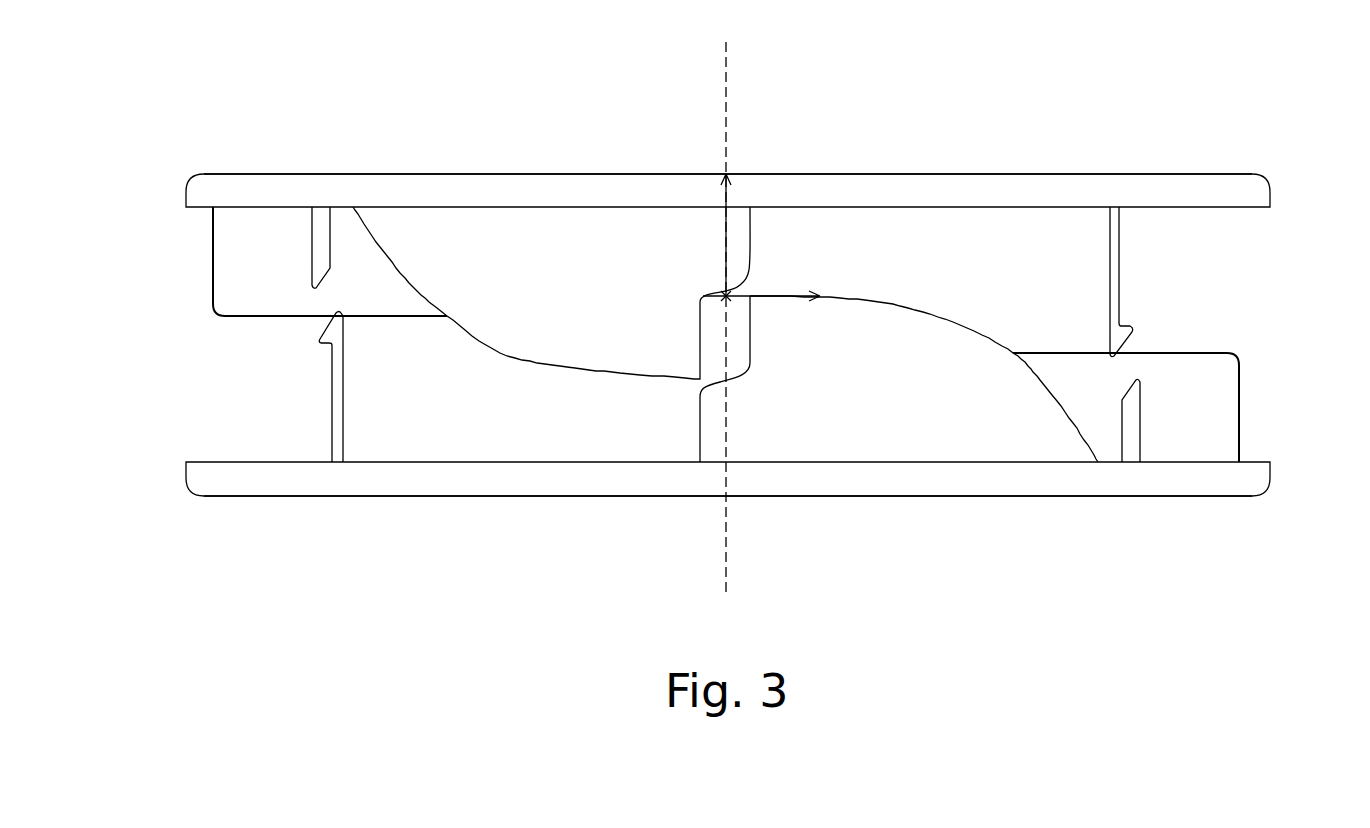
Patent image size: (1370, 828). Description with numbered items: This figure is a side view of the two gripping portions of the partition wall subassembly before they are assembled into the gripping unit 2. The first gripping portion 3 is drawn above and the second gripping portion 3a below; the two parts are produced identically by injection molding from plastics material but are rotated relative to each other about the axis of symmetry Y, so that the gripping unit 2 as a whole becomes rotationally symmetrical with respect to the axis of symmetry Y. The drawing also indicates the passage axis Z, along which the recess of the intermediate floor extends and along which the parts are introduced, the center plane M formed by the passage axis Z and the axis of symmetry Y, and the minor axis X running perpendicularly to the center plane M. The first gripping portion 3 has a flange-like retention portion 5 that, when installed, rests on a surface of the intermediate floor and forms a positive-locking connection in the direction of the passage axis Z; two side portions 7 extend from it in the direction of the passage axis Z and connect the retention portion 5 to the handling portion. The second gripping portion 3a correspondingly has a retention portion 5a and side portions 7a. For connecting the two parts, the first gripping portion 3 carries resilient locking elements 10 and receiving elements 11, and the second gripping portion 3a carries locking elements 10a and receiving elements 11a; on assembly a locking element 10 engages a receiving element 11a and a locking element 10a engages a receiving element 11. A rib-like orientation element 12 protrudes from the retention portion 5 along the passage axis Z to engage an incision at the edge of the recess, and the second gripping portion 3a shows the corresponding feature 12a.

The gripping unit 2 is at (983, 142).
The first gripping portion 3 is at (450, 183).
The second gripping portion 3a is at (1035, 483).
The retention portion 5 is at (653, 170).
The retention portion 5a is at (766, 517).
The side portions 7 is at (586, 270).
The side portions 7a is at (826, 423).
The locking element 10 is at (1120, 260).
The locking element 10a is at (319, 425).
The receiving element 11 is at (303, 248).
The receiving element 11a is at (1148, 430).
The orientation element 12 is at (204, 283).
The retaining bracket of lower plate 12a is at (1243, 345).
The center plane M is at (727, 78).
The minor axis X is at (761, 313).
The axis of symmetry Y is at (722, 296).
The passage axis Z is at (739, 215).